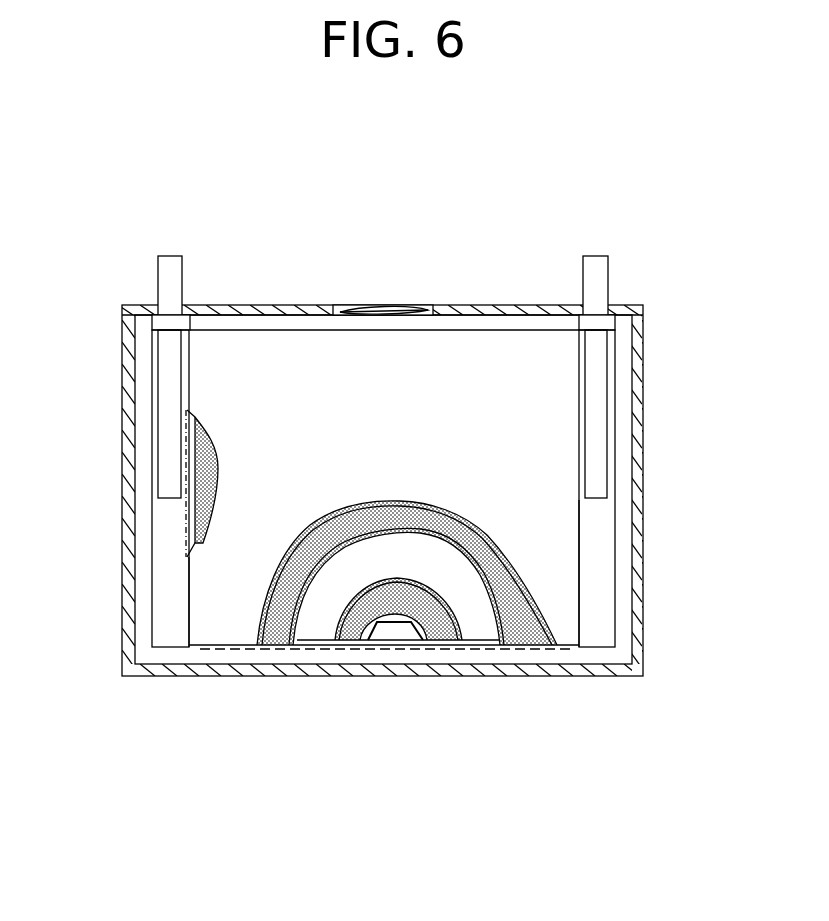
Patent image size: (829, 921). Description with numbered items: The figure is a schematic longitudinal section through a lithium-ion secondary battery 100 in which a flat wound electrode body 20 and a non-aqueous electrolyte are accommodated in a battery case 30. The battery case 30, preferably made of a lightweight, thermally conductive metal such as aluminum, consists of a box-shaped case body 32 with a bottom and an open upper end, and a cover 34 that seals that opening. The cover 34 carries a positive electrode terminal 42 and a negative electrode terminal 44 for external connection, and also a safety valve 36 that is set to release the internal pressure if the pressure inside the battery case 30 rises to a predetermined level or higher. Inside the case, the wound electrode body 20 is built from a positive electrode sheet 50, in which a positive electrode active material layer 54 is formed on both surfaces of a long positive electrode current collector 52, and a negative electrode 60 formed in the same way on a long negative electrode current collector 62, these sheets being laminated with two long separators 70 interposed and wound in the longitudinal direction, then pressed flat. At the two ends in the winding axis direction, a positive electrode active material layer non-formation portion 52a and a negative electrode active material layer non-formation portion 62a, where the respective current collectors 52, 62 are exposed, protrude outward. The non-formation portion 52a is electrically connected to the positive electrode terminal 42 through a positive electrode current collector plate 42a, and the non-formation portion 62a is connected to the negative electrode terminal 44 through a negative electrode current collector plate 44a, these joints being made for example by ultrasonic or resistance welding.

The lithium-ion secondary battery 100 is at (647, 270).
The wound electrode body 20 is at (276, 360).
The battery case 30 is at (646, 408).
The case body 32 is at (644, 653).
The cover 34 is at (548, 305).
The safety valve 36 is at (392, 305).
The positive electrode terminal 42 is at (171, 256).
The positive electrode current collector plate 42a is at (172, 393).
The negative electrode terminal 44 is at (596, 256).
The negative electrode current collector plate 44a is at (597, 358).
The positive electrode sheet 50 is at (275, 637).
The positive electrode current collector 52 is at (152, 550).
The positive electrode active material layer non-formation portion 52a is at (167, 623).
The positive electrode active material layer 54 is at (208, 448).
The negative electrode 60 is at (350, 630).
The negative electrode current collector 62 is at (617, 512).
The negative electrode active material layer non-formation portion 62a is at (602, 553).
The separator 70 is at (218, 583).